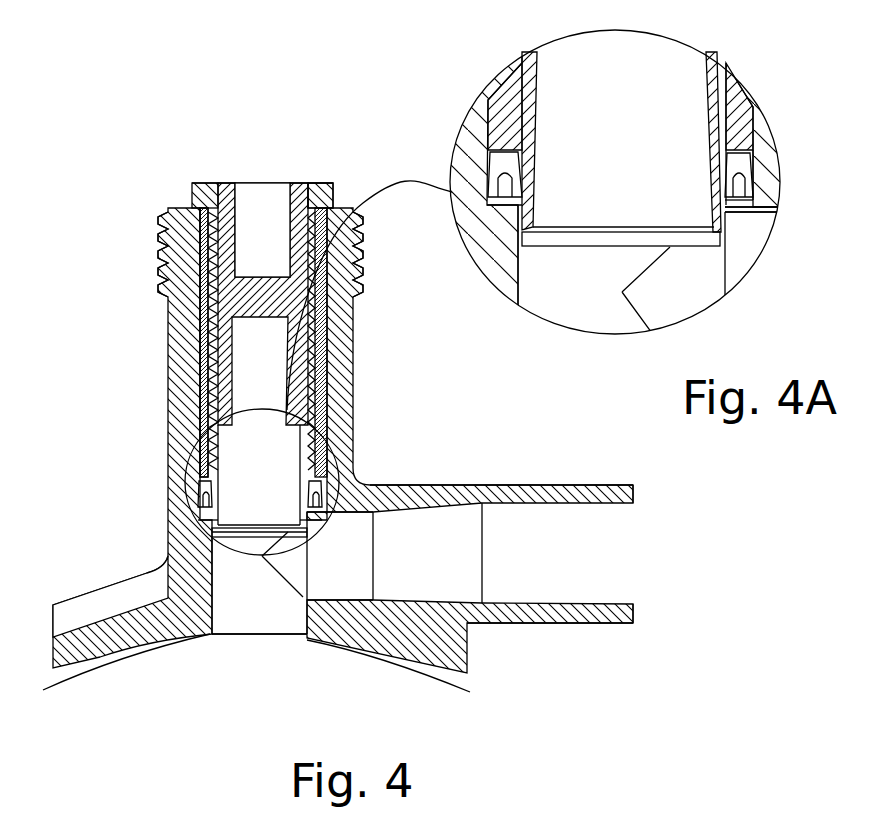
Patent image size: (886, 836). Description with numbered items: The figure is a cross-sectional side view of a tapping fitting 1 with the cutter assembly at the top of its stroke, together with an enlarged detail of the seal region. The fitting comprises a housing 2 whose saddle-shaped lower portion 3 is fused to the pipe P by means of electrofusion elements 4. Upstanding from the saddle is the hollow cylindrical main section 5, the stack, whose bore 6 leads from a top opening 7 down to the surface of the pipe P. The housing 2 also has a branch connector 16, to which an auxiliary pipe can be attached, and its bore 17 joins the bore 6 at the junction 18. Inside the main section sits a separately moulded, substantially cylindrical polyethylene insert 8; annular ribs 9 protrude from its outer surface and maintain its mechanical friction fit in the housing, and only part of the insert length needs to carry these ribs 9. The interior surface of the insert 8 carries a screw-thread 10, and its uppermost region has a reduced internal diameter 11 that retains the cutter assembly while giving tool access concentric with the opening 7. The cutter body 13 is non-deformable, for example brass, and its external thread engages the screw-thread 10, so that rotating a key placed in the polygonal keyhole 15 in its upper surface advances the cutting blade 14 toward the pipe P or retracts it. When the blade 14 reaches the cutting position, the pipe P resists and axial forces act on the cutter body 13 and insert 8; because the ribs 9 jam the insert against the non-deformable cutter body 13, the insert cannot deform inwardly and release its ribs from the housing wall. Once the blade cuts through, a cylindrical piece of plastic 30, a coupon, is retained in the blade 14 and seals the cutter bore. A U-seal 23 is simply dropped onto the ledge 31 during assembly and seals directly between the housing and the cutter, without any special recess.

In FIG. 4, the tapping fitting 1 is at (133, 445).
In FIG. 4, the housing 2 is at (183, 563).
In FIG. 4, the saddle-shaped lower portion 3 is at (73, 670).
In FIG. 4, the electrofusion elements 4 is at (211, 637).
In FIG. 4, the cylindrical main section 5 is at (195, 348).
In FIG. 4, the bore 6 is at (270, 597).
In FIG. 4, the top opening 7 is at (262, 187).
In FIG. 4, the insert 8 is at (196, 375).
In FIG. 4, the annular ribs 9 is at (328, 360).
In FIG. 4, the screw-thread 10 is at (313, 413).
In FIG. 4, the reduced internal diameter 11 is at (223, 190).
In FIG. 4, the cutter body 13 is at (334, 204).
In FIG. 4, the cutting blade 14 is at (204, 380).
In FIG. 4, the keyhole 15 is at (249, 246).
In FIG. 4, the branch connector 16 is at (600, 623).
In FIG. 4, the bore 17 is at (412, 578).
In FIG. 4, the junction 18 is at (312, 549).
In FIG. 4, the pipe P is at (473, 693).
In FIG. 4A, the U-seal 23 is at (742, 165).
In FIG. 4A, the cylindrical piece of plastic 30 is at (690, 240).
In FIG. 4A, the ledge 31 is at (747, 210).